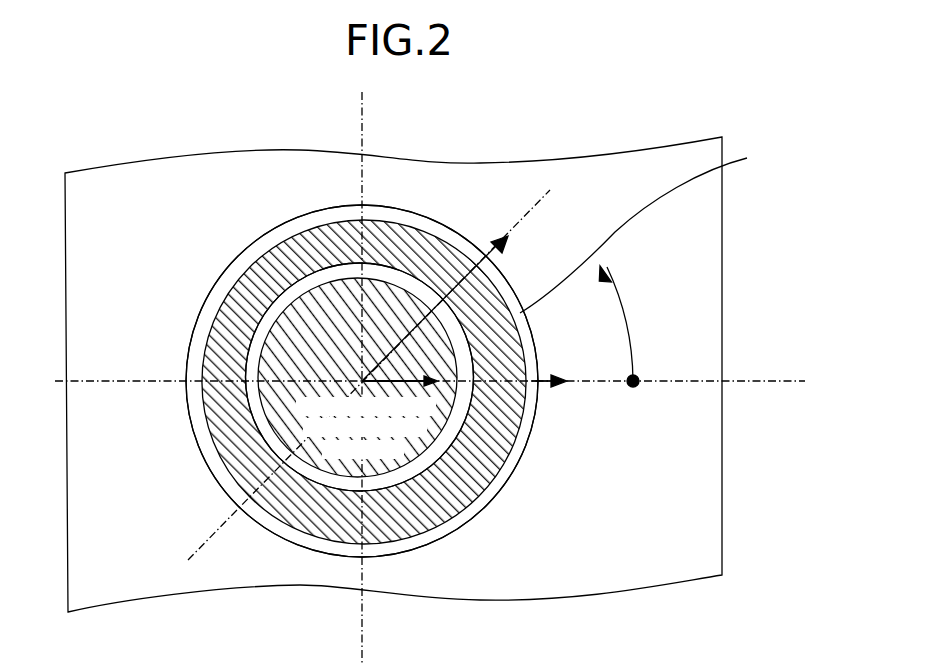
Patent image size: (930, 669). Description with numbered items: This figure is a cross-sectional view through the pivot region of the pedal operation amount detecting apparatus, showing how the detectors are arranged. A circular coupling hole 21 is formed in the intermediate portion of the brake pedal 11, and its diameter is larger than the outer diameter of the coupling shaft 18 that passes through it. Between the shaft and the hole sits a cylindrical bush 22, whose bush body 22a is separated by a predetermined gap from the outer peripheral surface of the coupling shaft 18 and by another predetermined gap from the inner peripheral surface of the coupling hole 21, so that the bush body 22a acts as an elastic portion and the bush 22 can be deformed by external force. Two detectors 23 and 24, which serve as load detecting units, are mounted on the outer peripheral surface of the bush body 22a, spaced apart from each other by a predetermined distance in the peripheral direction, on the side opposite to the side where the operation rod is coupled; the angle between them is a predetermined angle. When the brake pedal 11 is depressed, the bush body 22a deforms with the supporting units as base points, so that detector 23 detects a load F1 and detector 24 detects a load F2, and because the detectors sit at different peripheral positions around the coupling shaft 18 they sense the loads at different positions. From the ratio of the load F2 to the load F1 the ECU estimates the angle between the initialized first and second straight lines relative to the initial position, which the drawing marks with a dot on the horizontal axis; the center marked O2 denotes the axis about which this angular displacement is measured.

The brake pedal 11 is at (698, 228).
The coupling shaft 18 is at (193, 405).
The coupling hole 21 is at (418, 210).
The bush 22 is at (273, 233).
The bush body 22a is at (455, 508).
The detector 23 is at (540, 387).
The detector 24 is at (481, 248).
The rotation center O2 is at (277, 277).
The load F1 is at (551, 412).
The load F2 is at (435, 290).